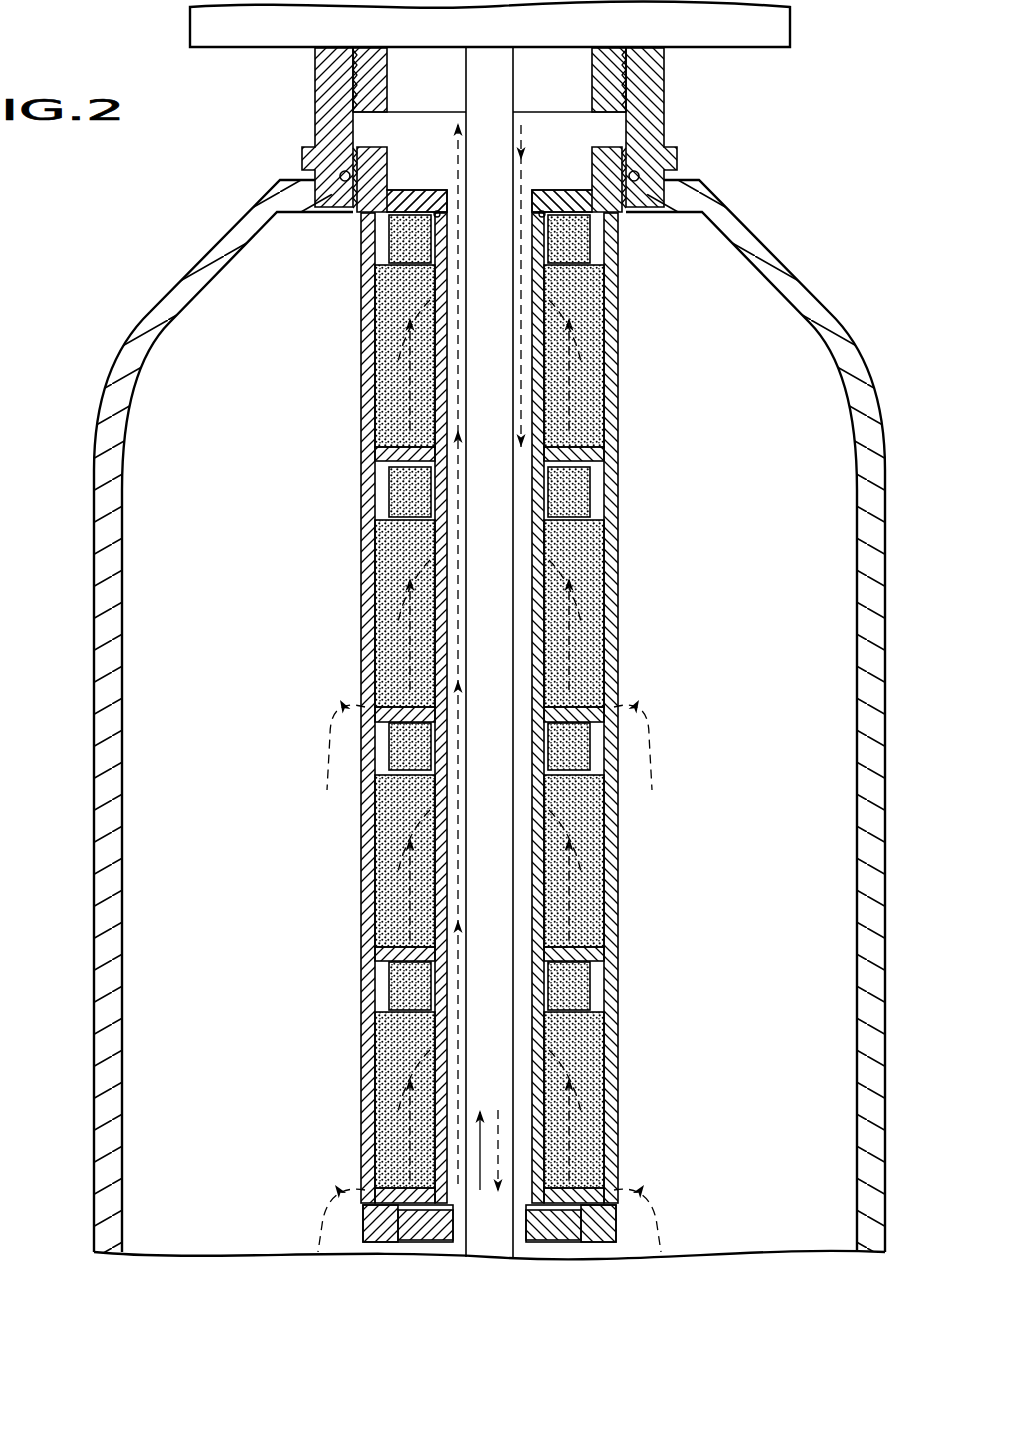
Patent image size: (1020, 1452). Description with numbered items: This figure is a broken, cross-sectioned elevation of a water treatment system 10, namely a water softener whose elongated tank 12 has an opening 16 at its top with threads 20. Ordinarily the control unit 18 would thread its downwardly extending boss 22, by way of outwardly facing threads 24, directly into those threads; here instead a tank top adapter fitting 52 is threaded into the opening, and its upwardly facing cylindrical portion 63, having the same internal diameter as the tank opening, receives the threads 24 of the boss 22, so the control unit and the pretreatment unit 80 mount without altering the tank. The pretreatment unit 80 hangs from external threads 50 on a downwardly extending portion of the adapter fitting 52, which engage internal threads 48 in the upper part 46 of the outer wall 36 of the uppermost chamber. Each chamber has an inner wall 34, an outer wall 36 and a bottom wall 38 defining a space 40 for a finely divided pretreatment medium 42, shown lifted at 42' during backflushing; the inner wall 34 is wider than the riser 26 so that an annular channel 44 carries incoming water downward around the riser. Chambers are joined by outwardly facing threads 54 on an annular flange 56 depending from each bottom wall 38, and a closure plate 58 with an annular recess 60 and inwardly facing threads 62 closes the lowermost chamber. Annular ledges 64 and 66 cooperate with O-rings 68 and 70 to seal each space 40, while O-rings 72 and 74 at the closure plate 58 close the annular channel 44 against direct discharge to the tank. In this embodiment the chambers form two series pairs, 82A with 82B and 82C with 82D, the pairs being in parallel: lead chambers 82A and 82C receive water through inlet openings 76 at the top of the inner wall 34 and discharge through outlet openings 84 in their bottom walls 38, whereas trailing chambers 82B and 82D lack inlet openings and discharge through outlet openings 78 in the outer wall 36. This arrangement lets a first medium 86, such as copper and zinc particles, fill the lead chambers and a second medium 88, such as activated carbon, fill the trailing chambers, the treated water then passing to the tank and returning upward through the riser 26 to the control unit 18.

The water treatment system 10 is at (770, 218).
The water softener tank 12 is at (886, 552).
The opening 16 is at (357, 220).
The control unit 18 is at (755, 32).
The threads 20 is at (348, 172).
The boss 22 is at (396, 120).
The outwardly facing threads 24 is at (640, 85).
The riser 26 is at (465, 635).
The inner wall 34 is at (466, 438).
The outer wall 36 is at (363, 352).
The bottom wall 38 is at (365, 515).
The space 40 is at (380, 385).
The pretreatment water treatment medium 42 is at (654, 740).
The lifted pretreatment medium 42' is at (641, 286).
The annular channel 44 is at (516, 497).
The upper part of the outer wall 46 is at (360, 245).
The internal threads 48 is at (447, 200).
The external threads 50 is at (362, 262).
The tank top adapter fitting 52 is at (682, 128).
The outwardly facing threads 54 is at (615, 470).
The annular flange 56 is at (615, 510).
The closure plate 58 is at (574, 1238).
The annular recess 60 is at (386, 1238).
The inwardly facing threads 62 is at (370, 1242).
The upwardly facing cylindrical portion 63 is at (660, 100).
The annular ledge 64 is at (446, 212).
The annular ledge 66 is at (370, 280).
The O-ring 68 is at (540, 214).
The O-ring 70 is at (612, 262).
The O-ring 72 is at (625, 1200).
The O-ring 74 is at (520, 1242).
The inlet openings 76 is at (445, 290).
The outlet openings 78 is at (612, 688).
The pretreatment unit 80 is at (648, 577).
The lead upstream chamber 82A is at (608, 370).
The trailing downstream chamber 82B is at (612, 650).
The lead upstream chamber 82C is at (610, 865).
The trailing downstream chamber 82D is at (612, 1105).
The outlet openings 84 is at (415, 458).
The first medium 86 is at (608, 330).
The second medium 88 is at (605, 610).